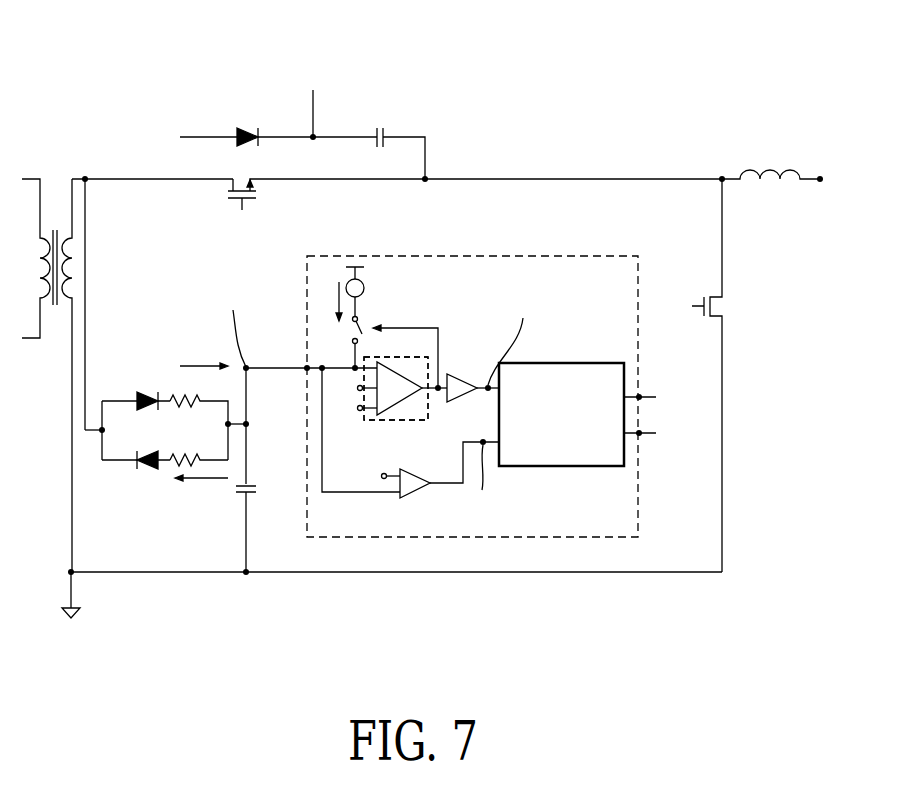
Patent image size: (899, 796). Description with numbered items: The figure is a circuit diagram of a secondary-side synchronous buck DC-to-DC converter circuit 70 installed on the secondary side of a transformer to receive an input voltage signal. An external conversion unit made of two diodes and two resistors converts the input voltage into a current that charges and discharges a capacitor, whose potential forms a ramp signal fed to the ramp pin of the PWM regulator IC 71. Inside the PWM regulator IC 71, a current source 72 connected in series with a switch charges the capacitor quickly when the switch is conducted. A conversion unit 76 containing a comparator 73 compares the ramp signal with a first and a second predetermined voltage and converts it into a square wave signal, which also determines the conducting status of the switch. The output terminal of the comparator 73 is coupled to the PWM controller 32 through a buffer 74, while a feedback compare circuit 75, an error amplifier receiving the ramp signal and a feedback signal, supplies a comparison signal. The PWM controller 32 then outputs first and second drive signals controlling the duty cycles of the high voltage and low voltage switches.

The synchronous buck DC-to-DC converter circuit 70 is at (87, 42).
The PWM regulator IC 71 is at (347, 537).
The current source 72 is at (366, 282).
The comparator 73 is at (395, 372).
The buffer 74 is at (470, 375).
The feedback compare circuit 75 is at (420, 497).
The conversion unit 76 is at (415, 355).
The PWM controller 32 is at (552, 466).